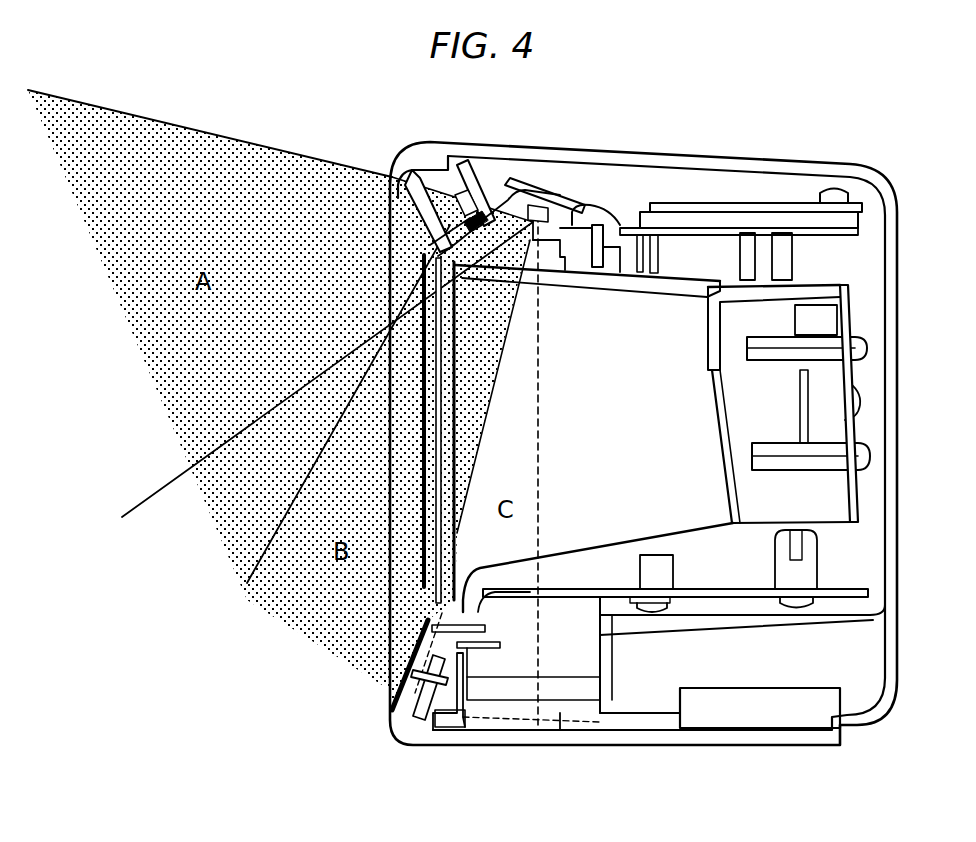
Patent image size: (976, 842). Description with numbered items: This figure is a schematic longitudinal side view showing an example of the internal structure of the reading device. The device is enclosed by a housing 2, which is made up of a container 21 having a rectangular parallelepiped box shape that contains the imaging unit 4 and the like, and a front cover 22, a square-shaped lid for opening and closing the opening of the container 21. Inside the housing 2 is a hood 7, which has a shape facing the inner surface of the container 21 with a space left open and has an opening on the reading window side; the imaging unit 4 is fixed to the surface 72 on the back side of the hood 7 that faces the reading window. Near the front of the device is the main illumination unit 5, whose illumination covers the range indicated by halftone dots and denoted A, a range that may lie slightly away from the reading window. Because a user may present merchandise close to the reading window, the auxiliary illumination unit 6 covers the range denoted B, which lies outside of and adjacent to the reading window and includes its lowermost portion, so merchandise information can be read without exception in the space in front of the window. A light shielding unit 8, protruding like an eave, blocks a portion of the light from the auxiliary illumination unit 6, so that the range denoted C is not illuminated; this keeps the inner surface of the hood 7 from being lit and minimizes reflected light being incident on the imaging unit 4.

The housing 2 is at (823, 165).
The container 21 is at (727, 160).
The front cover 22 is at (412, 148).
The imaging unit 4 is at (827, 430).
The main illumination unit 5 is at (481, 190).
The auxiliary illumination unit 6 is at (541, 238).
The hood 7 is at (552, 567).
The light shielding unit 8 is at (547, 247).
The surface on the back side of the hood 72 is at (848, 375).